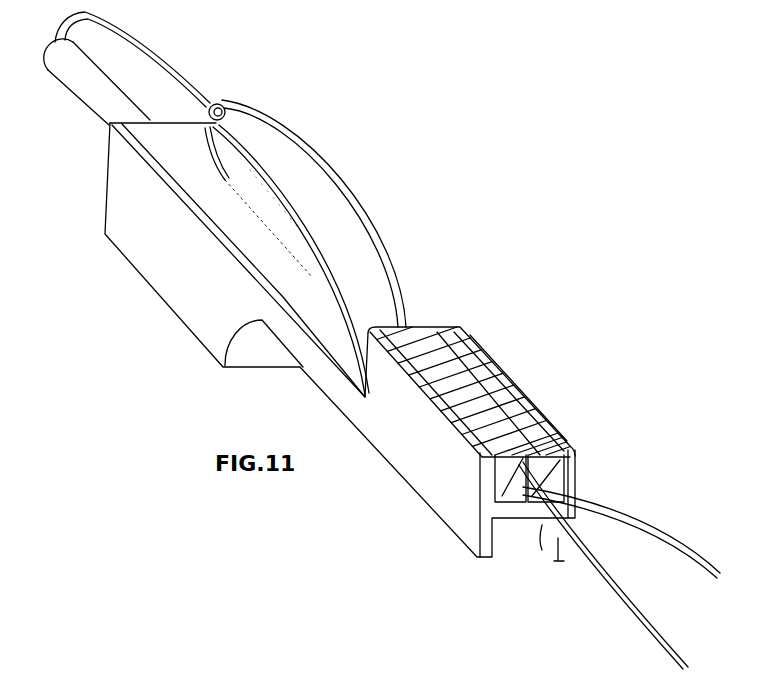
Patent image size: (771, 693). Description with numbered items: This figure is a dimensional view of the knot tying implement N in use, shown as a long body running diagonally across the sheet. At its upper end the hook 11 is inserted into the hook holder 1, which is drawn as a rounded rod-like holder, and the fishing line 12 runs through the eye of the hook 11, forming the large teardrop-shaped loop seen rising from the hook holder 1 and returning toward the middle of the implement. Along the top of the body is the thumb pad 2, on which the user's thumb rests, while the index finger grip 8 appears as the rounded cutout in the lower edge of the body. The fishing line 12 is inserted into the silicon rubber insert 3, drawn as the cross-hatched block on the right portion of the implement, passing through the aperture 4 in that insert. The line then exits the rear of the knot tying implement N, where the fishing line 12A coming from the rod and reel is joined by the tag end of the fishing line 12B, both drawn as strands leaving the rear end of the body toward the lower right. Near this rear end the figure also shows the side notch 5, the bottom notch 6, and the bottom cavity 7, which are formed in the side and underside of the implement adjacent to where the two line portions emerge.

The hook holder 1 is at (92, 97).
The hook 11 is at (157, 55).
The knot tying implement N is at (132, 208).
The index finger grip 8 is at (262, 349).
The fishing line 12 is at (363, 222).
The thumb pad 2 is at (323, 255).
The silicon rubber insert 3 is at (469, 367).
The aperture 4 is at (497, 406).
The side notch 5 is at (573, 530).
The bottom notch 6 is at (550, 540).
The bottom cavity 7 is at (503, 527).
The fishing line from the rod and reel 12A is at (656, 638).
The tag end of the fishing line 12B is at (637, 515).